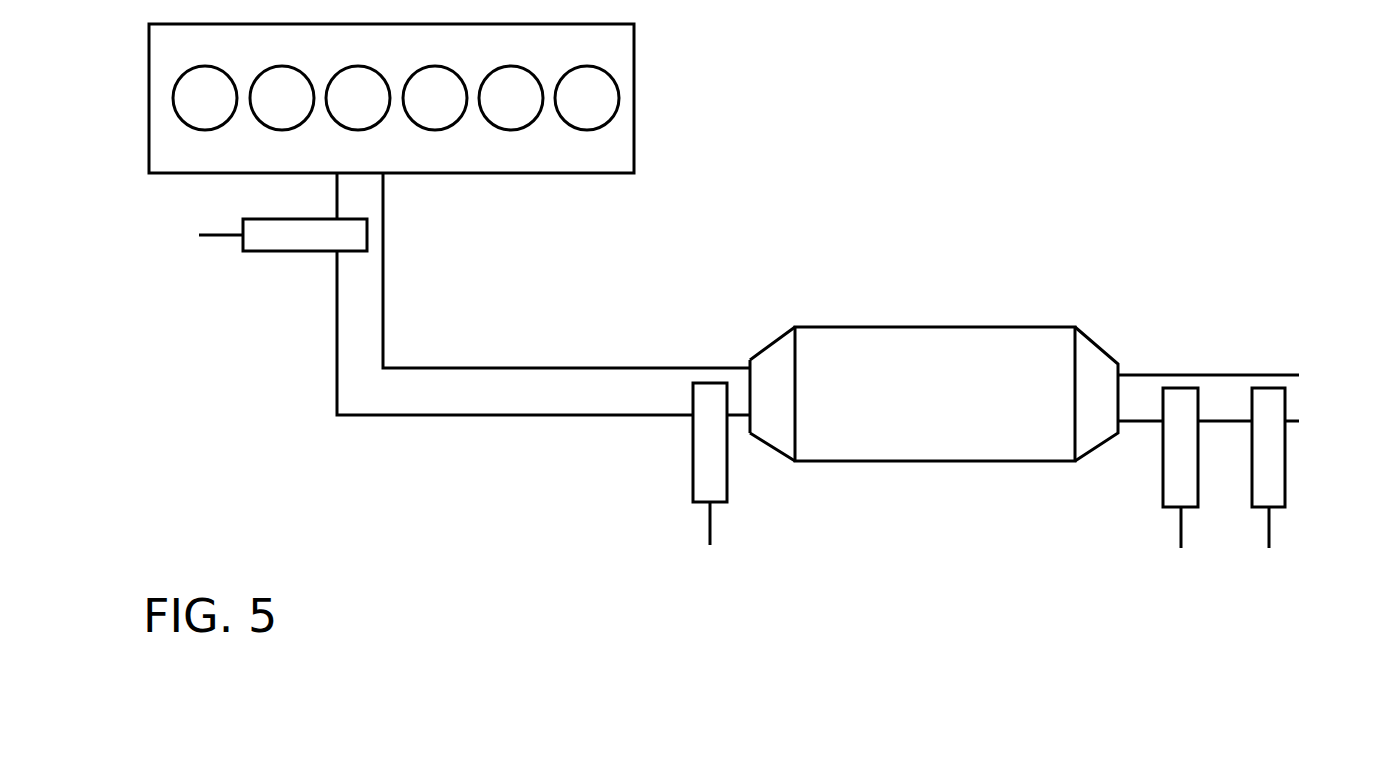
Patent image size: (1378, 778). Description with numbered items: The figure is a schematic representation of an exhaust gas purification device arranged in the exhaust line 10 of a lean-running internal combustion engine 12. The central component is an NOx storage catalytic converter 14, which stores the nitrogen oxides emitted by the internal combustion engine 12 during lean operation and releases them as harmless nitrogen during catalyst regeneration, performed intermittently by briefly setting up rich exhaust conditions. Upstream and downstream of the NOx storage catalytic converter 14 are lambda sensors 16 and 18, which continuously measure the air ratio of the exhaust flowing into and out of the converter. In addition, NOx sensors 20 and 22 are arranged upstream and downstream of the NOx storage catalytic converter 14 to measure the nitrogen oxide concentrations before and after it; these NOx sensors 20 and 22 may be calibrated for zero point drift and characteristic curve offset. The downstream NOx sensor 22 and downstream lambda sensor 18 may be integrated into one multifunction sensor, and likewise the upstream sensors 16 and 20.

The exhaust line 10 is at (535, 368).
The internal combustion engine 12 is at (637, 59).
The NOx storage catalytic converter 14 is at (951, 327).
The lambda sensor 16 is at (263, 247).
The lambda sensor 18 is at (1285, 489).
The NOx sensor 20 is at (727, 486).
The NOx sensor 22 is at (1163, 489).